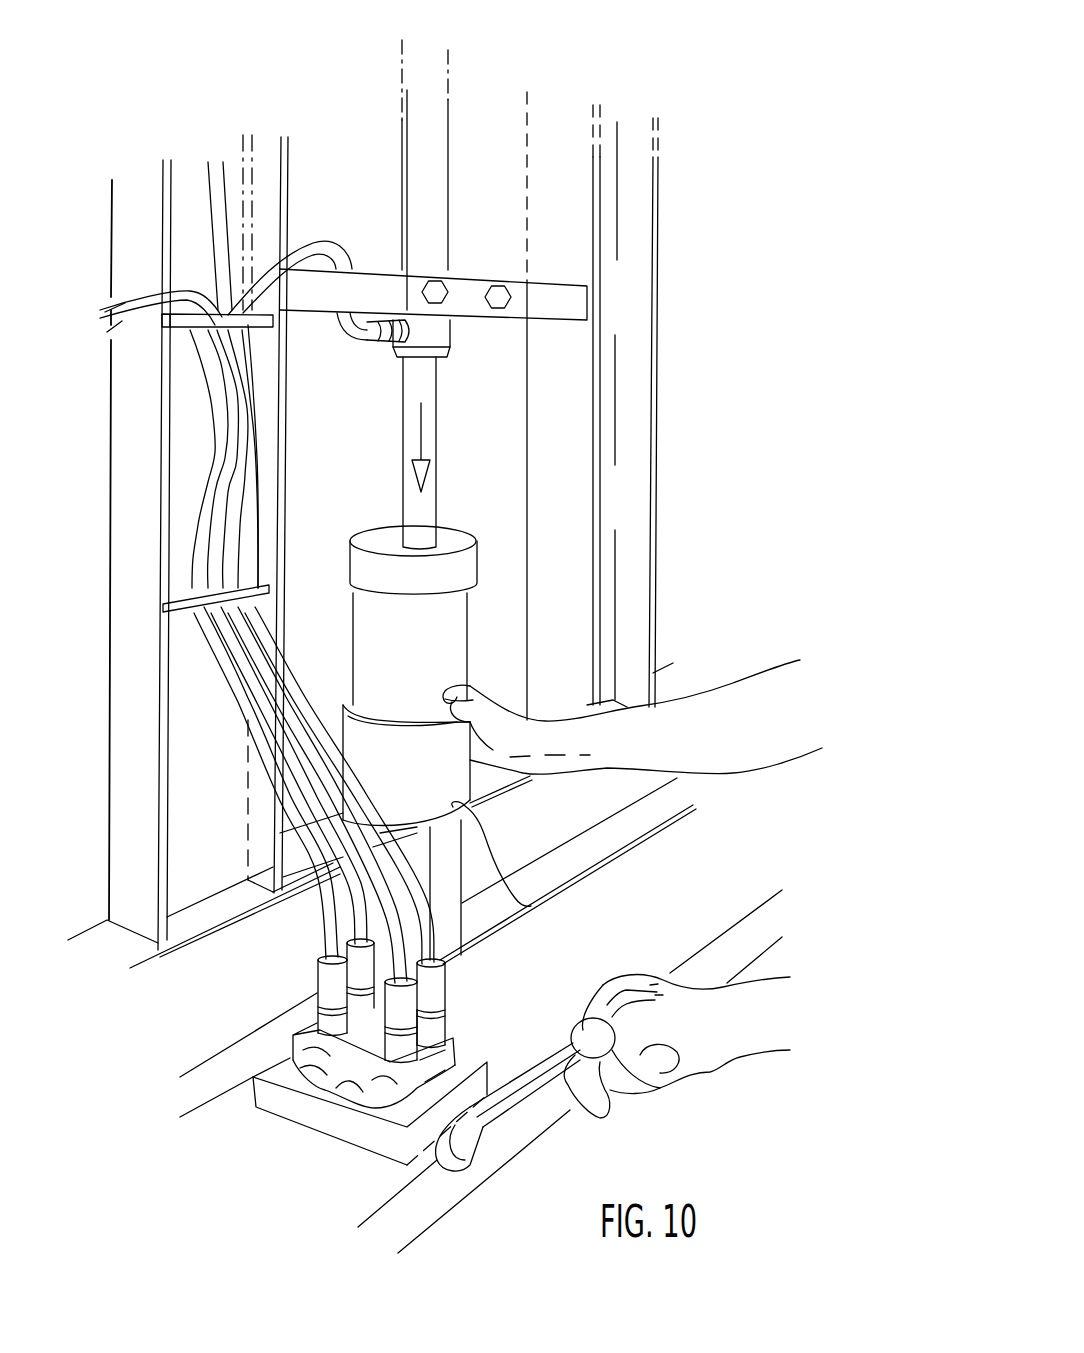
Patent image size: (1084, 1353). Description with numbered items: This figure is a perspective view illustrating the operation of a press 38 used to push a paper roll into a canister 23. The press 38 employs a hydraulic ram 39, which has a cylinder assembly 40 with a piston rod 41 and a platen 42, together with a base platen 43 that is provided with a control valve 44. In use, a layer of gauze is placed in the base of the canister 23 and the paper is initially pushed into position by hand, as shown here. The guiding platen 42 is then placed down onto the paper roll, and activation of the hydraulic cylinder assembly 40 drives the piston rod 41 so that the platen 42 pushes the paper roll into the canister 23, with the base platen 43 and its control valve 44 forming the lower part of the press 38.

The canister 23 is at (450, 665).
The press 38 is at (743, 283).
The hydraulic ram 39 is at (437, 207).
The cylinder assembly 40 is at (420, 100).
The piston rod 41 is at (428, 430).
The platen 42 is at (458, 539).
The base platen 43 is at (531, 905).
The control valve 44 is at (333, 1133).